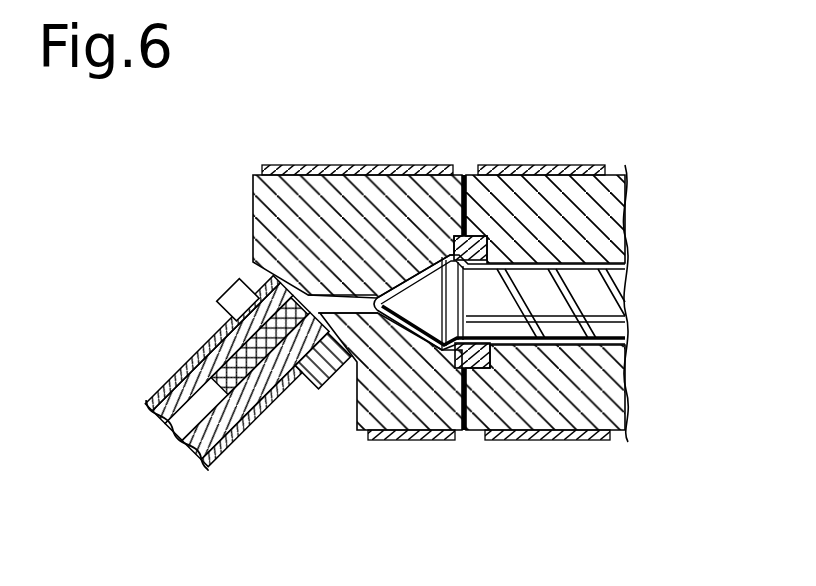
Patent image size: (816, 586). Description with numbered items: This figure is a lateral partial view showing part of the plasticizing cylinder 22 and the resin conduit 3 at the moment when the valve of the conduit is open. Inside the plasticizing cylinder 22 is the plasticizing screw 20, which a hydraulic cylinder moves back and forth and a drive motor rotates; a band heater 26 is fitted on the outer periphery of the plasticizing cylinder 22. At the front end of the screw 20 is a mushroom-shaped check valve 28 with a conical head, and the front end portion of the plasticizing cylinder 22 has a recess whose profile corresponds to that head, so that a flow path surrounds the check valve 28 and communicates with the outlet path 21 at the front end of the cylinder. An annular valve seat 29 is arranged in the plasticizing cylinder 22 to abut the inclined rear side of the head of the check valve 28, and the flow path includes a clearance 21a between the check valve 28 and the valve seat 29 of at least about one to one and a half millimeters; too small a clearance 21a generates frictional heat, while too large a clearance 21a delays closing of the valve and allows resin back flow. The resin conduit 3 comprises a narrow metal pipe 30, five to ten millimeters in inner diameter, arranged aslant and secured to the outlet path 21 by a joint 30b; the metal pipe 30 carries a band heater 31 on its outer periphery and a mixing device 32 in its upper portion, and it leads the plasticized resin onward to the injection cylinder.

The resin conduit 3 is at (148, 401).
The plasticizing screw 20 is at (598, 303).
The outlet path 21 is at (345, 303).
The clearance 21a is at (488, 438).
The plasticizing cylinder 22 is at (306, 202).
The band heater 26 is at (480, 440).
The check valve 28 is at (422, 283).
The annular valve seat 29 is at (484, 232).
The metal pipe 30 is at (202, 355).
The joint 30b is at (242, 285).
The band heater 31 is at (280, 400).
The mixing device 32 is at (243, 385).